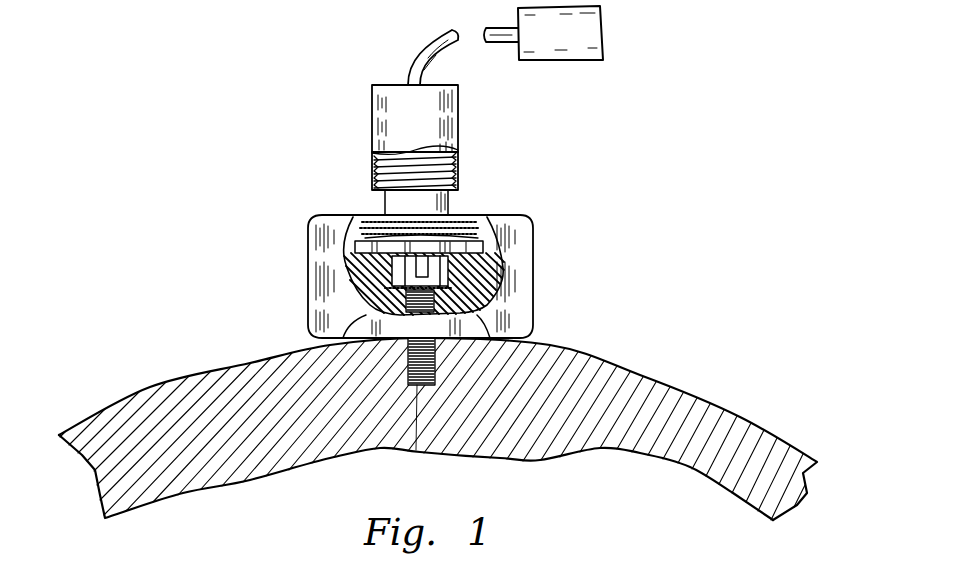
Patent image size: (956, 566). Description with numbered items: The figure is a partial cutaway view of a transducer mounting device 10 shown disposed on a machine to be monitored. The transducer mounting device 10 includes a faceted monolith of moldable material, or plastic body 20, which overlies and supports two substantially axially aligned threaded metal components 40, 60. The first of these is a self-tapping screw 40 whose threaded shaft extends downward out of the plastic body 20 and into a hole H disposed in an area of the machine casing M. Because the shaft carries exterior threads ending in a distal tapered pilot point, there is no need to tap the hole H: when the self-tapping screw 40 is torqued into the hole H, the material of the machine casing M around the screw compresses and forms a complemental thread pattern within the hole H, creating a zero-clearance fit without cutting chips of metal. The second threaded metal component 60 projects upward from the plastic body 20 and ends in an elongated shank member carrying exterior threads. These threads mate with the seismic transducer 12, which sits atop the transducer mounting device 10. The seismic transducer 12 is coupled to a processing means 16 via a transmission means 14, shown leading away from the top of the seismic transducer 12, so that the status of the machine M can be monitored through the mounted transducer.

The transducer mounting device 10 is at (575, 160).
The seismic transducer 12 is at (457, 123).
The transmission means 14 is at (433, 37).
The processing means 16 is at (573, 42).
The plastic body 20 is at (520, 272).
The self-tapping screw 40 is at (373, 272).
The second threaded metal component 60 is at (363, 180).
The machine casing M is at (604, 357).
The hole H is at (416, 450).